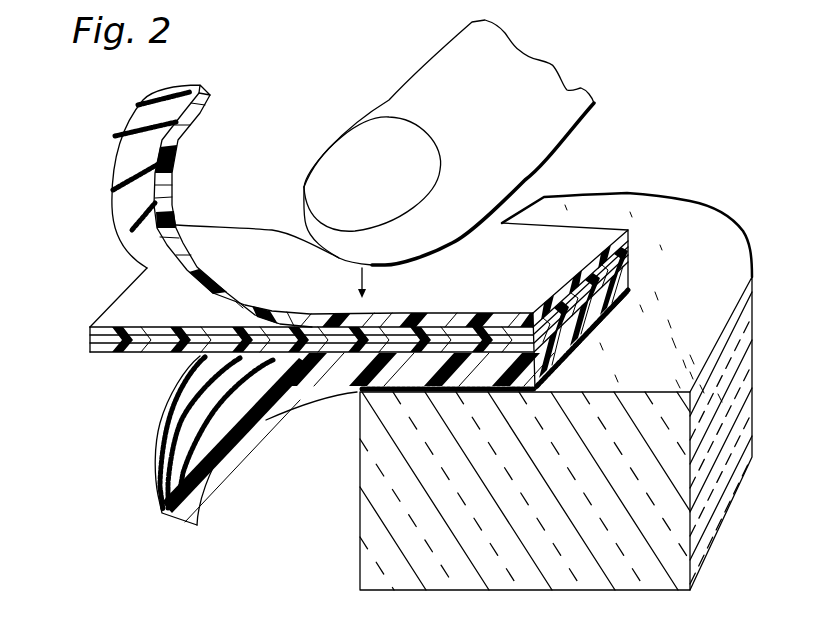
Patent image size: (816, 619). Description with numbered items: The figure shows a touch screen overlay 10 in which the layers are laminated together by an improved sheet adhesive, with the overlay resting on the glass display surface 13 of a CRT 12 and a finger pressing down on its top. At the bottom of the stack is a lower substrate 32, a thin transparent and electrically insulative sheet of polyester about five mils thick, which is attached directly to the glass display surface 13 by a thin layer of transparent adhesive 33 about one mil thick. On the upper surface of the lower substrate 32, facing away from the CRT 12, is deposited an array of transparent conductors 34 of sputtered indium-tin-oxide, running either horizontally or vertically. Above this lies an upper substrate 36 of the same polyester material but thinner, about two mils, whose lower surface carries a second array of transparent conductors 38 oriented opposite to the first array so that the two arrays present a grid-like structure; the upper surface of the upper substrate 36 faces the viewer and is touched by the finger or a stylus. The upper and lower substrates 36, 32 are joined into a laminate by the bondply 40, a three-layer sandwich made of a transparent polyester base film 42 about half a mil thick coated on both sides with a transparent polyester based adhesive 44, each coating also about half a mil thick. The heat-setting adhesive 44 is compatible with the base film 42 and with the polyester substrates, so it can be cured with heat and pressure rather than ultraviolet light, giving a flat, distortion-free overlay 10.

The touch screen overlay 10 is at (97, 193).
The CRT 12 is at (358, 548).
The glass display surface 13 is at (627, 297).
The lower substrate 32 is at (187, 510).
The transparent adhesive 33 is at (565, 357).
The transparent conductors 34 is at (165, 460).
The upper substrate 36 is at (200, 115).
The transparent conductors 38 is at (127, 173).
The bondply 40 is at (88, 326).
The polyester base film 42 is at (90, 343).
The polyester based adhesive 44 is at (115, 307).